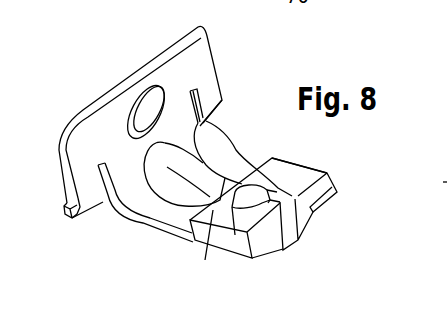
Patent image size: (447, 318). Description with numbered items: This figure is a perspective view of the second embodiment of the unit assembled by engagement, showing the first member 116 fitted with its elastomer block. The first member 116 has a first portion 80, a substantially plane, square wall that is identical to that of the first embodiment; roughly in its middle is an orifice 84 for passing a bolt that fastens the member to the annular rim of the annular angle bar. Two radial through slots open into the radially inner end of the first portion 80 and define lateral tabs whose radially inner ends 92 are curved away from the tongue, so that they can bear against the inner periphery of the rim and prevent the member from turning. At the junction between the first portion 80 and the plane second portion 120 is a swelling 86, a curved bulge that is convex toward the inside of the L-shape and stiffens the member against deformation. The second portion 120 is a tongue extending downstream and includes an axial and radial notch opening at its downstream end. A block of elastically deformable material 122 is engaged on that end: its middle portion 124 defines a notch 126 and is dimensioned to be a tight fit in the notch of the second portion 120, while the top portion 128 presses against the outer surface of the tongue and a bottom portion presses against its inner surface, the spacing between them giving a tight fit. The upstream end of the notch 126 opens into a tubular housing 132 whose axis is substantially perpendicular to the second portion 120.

The first portion 80 is at (148, 55).
The orifice 84 is at (139, 102).
The swelling 86 is at (181, 168).
The radially inner ends 92 is at (72, 217).
The first member 116 is at (158, 252).
The second portion 120 is at (240, 158).
The block of elastically deformable material 122 is at (322, 165).
The middle portion 124 is at (303, 214).
The notch 126 is at (292, 175).
The top portion 128 is at (205, 258).
The tubular housing 132 is at (235, 235).